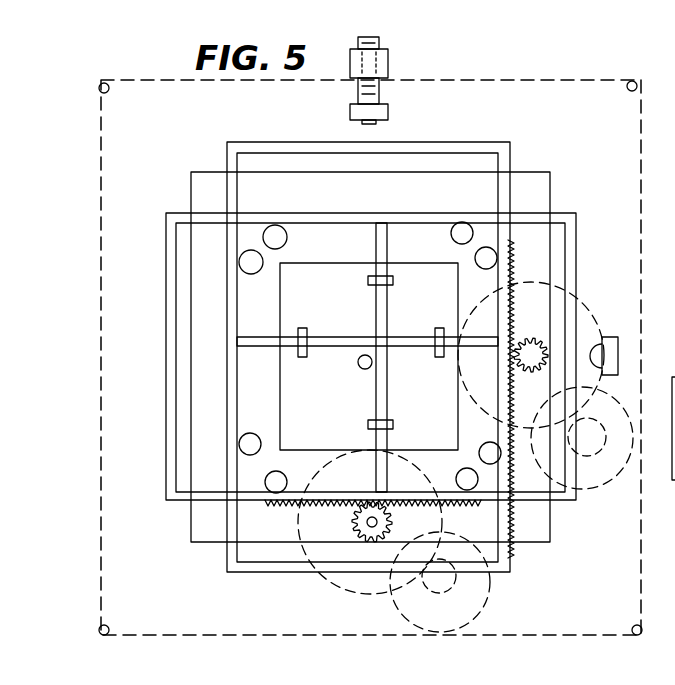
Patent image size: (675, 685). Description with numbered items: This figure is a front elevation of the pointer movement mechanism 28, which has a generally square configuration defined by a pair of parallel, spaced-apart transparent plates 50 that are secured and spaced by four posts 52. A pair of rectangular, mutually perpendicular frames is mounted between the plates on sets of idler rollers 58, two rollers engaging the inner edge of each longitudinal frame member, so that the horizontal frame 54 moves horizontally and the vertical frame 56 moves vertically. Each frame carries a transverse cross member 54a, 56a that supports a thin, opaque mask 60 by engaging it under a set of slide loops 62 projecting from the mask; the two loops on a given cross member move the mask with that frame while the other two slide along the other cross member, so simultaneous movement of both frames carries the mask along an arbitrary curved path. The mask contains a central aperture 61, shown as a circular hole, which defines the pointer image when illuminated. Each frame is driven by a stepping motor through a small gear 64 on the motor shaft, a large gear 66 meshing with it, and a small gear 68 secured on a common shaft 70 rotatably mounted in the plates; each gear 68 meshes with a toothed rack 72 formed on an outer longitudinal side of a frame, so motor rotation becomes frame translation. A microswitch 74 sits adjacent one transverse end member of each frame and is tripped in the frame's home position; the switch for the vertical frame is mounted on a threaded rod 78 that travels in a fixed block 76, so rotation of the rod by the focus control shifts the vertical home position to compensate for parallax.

The pointer movement mechanism 28 is at (95, 335).
The plates 50 is at (506, 78).
The posts 52 is at (110, 84).
The horizontal frame 54 is at (578, 254).
The transverse cross member 54a is at (373, 486).
The vertical frame 56 is at (268, 574).
The transverse cross member 56a is at (264, 337).
The idler rollers 58 is at (286, 250).
The mask 60 is at (355, 324).
The central aperture 61 is at (355, 361).
The slide loops 62 is at (440, 328).
The small gear 64 is at (596, 452).
The large gear 66 is at (586, 300).
The small gear 68 is at (530, 338).
The common shaft 70 is at (367, 524).
The toothed rack 72 is at (513, 460).
The microswitch 74 is at (350, 112).
The fixed block 76 is at (350, 62).
The threaded rod 78 is at (380, 98).